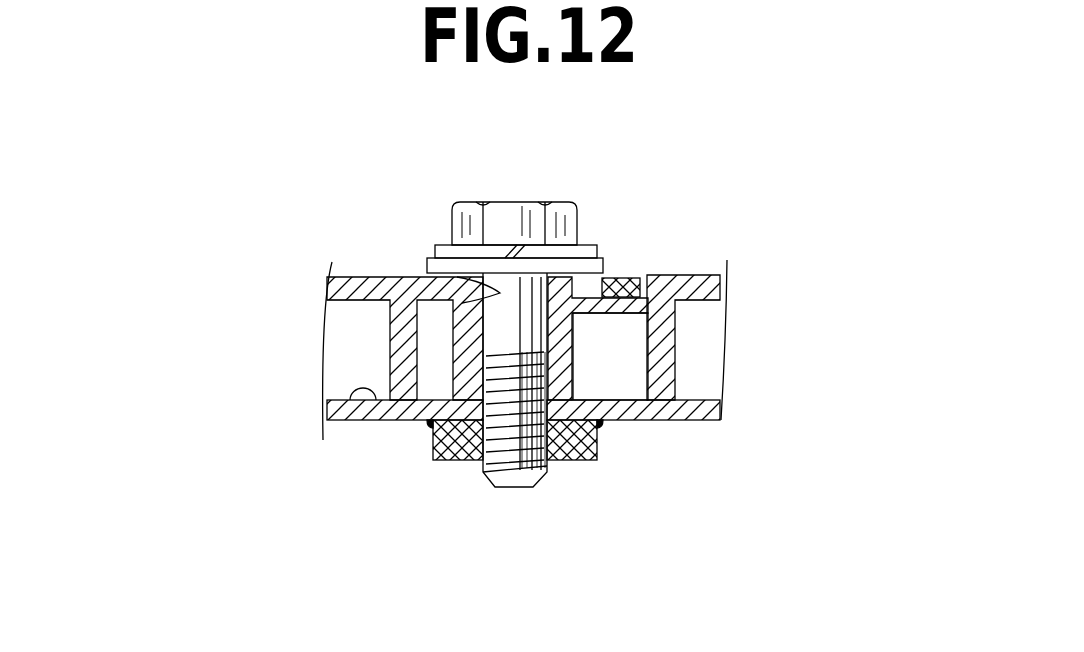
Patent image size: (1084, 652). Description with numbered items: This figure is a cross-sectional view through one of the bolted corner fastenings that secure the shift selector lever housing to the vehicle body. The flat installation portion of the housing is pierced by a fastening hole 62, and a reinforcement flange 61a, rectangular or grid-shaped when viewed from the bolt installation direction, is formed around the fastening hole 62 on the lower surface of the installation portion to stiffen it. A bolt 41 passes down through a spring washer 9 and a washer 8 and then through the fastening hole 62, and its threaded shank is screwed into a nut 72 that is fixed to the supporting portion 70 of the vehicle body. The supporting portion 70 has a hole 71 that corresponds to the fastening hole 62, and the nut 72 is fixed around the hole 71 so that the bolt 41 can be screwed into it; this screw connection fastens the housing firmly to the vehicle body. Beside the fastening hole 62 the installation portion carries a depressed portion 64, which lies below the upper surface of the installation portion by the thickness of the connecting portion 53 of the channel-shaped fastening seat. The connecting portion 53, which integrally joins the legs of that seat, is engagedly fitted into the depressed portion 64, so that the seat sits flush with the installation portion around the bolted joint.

The bolt 41 is at (530, 200).
The spring washer 9 is at (602, 256).
The washer 8 is at (622, 275).
The connecting portion 53 is at (636, 272).
The depressed portion 64 is at (645, 273).
The fastening hole 62 is at (457, 277).
The reinforcement flange 61a is at (389, 357).
The supporting portion 70 is at (352, 400).
The hole 71 is at (450, 462).
The nut 72 is at (570, 462).